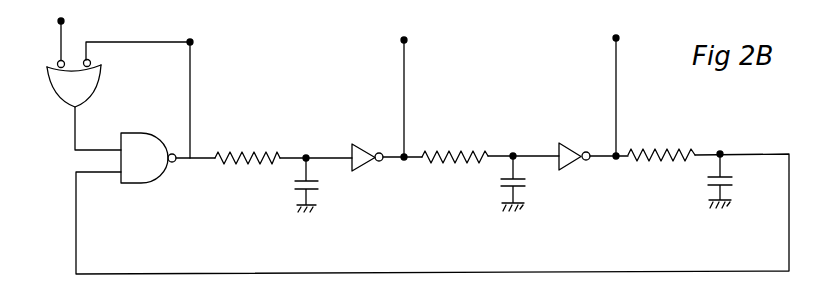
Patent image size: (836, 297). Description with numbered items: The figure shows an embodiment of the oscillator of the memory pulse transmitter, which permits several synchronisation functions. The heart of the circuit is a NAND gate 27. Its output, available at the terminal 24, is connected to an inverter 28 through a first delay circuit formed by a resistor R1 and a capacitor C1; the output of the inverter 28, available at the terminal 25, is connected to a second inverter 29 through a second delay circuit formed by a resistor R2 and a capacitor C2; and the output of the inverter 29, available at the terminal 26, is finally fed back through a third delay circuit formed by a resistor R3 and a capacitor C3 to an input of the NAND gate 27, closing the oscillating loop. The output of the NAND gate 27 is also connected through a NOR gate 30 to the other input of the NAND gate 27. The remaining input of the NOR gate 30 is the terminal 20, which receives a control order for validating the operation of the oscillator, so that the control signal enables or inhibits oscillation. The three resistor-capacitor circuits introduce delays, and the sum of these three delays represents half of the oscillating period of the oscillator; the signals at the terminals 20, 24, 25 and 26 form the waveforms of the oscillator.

The terminal 20 is at (45, 36).
The terminal 24 is at (152, 45).
The terminal 25 is at (417, 96).
The terminal 26 is at (628, 95).
The NAND gate 27 is at (120, 181).
The inverter 28 is at (356, 170).
The inverter 29 is at (560, 167).
The NOR gate 30 is at (84, 84).
The resistor R1 is at (228, 152).
The resistor R2 is at (440, 152).
The resistor R3 is at (650, 151).
The capacitor C1 is at (315, 187).
The capacitor C2 is at (509, 185).
The capacitor C3 is at (728, 187).